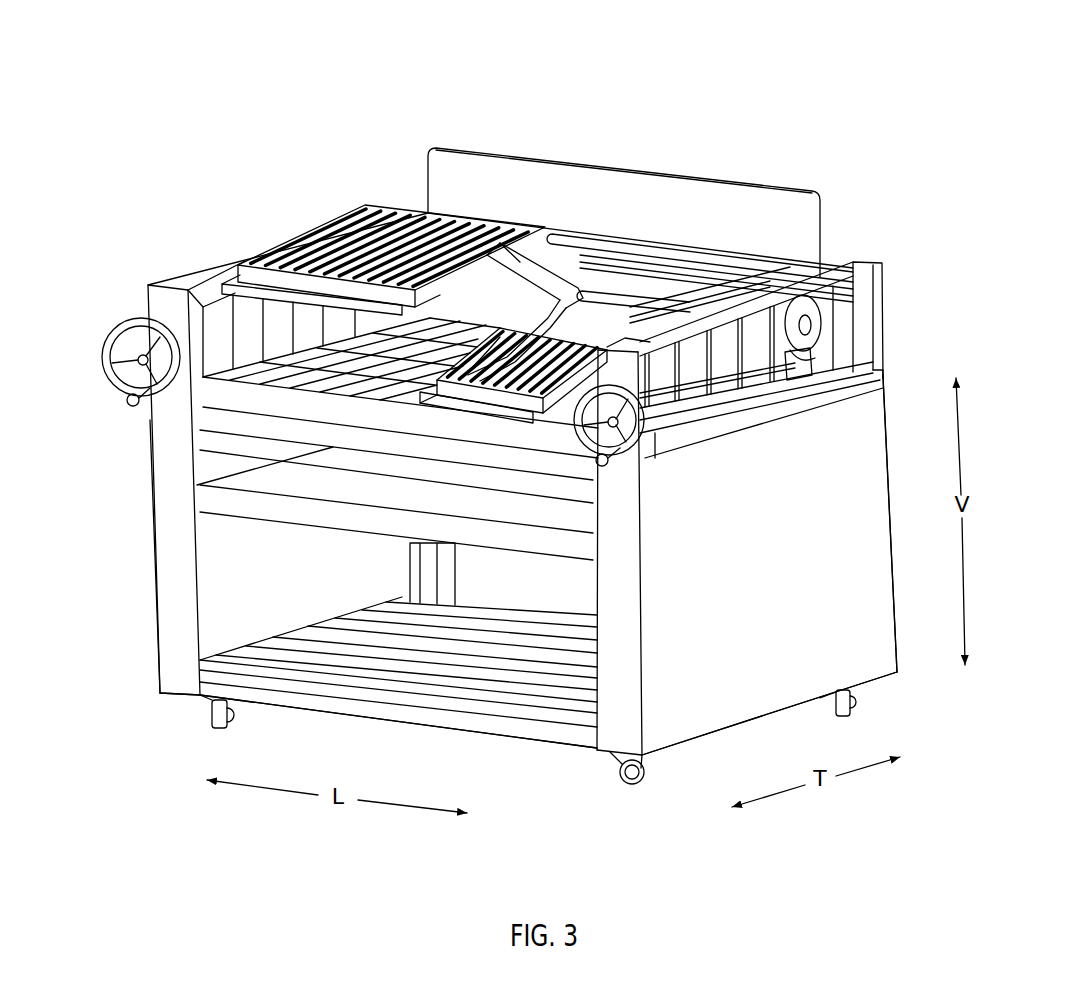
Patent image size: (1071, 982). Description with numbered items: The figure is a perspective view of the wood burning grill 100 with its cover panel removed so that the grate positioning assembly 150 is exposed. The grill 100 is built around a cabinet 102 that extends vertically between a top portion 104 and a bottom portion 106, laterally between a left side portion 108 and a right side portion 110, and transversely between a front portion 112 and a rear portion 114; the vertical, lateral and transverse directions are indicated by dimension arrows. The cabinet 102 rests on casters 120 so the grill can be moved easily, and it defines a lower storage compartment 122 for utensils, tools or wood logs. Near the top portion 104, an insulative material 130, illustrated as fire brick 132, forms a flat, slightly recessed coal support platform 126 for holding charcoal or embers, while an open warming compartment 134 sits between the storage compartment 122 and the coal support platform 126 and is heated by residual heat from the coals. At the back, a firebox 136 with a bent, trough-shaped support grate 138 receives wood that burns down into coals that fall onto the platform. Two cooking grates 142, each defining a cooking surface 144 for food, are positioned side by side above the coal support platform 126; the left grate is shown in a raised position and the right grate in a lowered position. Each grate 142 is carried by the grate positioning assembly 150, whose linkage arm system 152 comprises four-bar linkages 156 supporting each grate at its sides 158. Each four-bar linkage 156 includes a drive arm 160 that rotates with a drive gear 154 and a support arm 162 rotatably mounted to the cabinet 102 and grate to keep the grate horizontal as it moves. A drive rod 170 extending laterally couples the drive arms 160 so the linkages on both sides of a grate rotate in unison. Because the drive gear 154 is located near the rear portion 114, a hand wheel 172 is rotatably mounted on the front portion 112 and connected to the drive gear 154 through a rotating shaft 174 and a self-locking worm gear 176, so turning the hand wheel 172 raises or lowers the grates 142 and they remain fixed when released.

The wood burning grill 100 is at (164, 83).
The cabinet 102 is at (175, 560).
The top portion 104 is at (194, 271).
The bottom portion 106 is at (182, 703).
The left side portion 108 is at (152, 656).
The right side portion 110 is at (681, 727).
The front portion 112 is at (566, 740).
The rear portion 114 is at (894, 390).
The casters 120 is at (217, 728).
The lower storage compartment 122 is at (433, 655).
The coal support platform 126 is at (300, 370).
The insulative material 130 is at (350, 379).
The fire brick 132 is at (402, 385).
The warming compartment 134 is at (524, 507).
The firebox 136 is at (726, 212).
The support grate 138 is at (667, 187).
The cooking grate 142 is at (368, 216).
The cooking surface 144 is at (337, 229).
The grate positioning assembly 150 is at (737, 415).
The linkage arm system 152 is at (521, 261).
The drive gear 154 is at (808, 311).
The four-bar linkage 156 is at (489, 257).
The grate side 158 is at (275, 236).
The drive arm 160 is at (545, 274).
The support arm 162 is at (500, 373).
The drive rod 170 is at (629, 258).
The hand wheel 172 is at (109, 343).
The rotating shaft 174 is at (790, 388).
The worm gear 176 is at (843, 398).